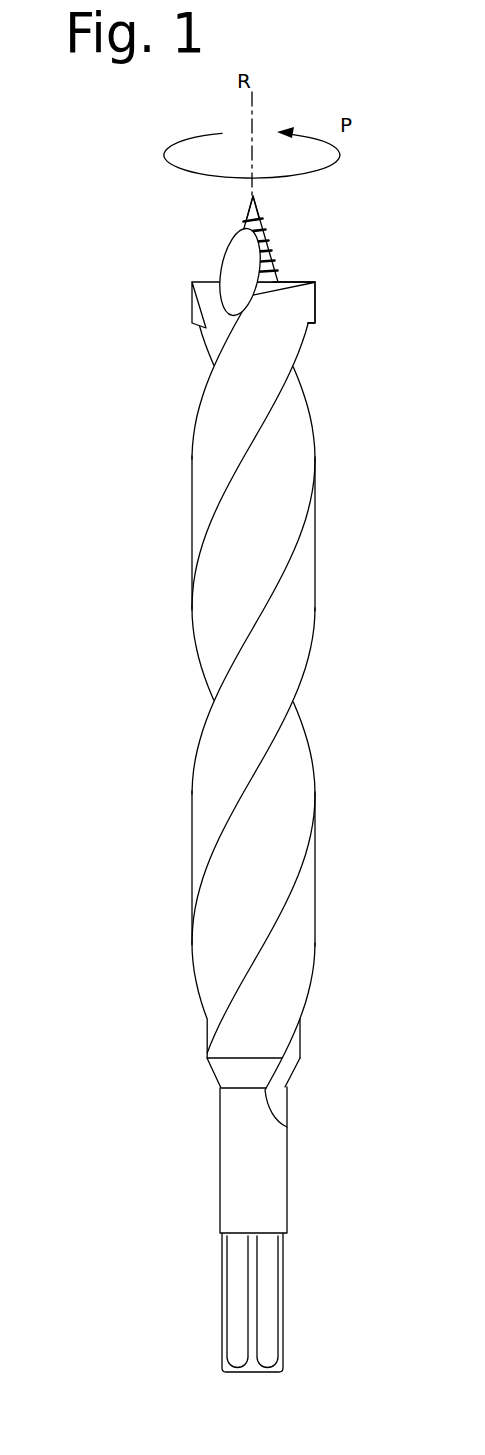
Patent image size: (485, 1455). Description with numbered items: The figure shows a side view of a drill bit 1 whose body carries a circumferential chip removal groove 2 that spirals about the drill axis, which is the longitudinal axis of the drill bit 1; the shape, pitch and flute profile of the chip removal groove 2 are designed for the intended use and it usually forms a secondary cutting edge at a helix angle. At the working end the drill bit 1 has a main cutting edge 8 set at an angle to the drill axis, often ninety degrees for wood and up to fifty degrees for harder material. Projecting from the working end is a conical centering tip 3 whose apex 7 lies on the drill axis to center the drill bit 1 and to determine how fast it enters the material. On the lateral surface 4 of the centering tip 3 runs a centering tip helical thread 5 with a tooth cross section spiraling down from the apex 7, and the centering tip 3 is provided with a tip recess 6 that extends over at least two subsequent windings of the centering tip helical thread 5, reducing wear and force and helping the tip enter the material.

The drill bit 1 is at (228, 774).
The chip removal groove 2 is at (277, 441).
The centering tip 3 is at (257, 229).
The lateral surface 4 is at (266, 237).
The centering tip helical thread 5 is at (238, 238).
The tip recess 6 is at (235, 252).
The apex 7 is at (253, 203).
The main cutting edge 8 is at (211, 283).